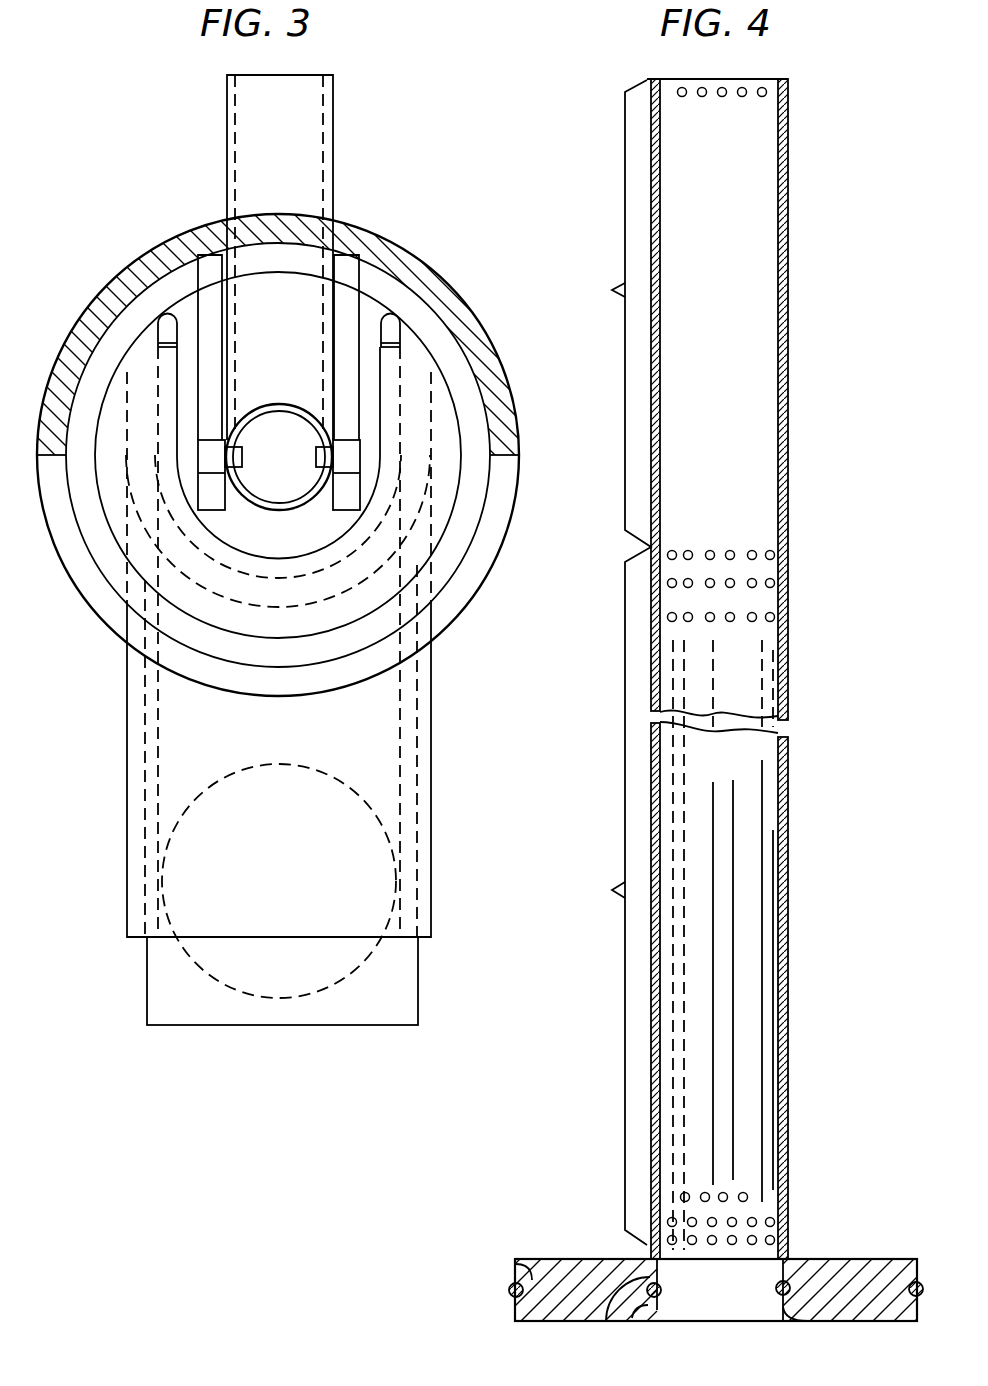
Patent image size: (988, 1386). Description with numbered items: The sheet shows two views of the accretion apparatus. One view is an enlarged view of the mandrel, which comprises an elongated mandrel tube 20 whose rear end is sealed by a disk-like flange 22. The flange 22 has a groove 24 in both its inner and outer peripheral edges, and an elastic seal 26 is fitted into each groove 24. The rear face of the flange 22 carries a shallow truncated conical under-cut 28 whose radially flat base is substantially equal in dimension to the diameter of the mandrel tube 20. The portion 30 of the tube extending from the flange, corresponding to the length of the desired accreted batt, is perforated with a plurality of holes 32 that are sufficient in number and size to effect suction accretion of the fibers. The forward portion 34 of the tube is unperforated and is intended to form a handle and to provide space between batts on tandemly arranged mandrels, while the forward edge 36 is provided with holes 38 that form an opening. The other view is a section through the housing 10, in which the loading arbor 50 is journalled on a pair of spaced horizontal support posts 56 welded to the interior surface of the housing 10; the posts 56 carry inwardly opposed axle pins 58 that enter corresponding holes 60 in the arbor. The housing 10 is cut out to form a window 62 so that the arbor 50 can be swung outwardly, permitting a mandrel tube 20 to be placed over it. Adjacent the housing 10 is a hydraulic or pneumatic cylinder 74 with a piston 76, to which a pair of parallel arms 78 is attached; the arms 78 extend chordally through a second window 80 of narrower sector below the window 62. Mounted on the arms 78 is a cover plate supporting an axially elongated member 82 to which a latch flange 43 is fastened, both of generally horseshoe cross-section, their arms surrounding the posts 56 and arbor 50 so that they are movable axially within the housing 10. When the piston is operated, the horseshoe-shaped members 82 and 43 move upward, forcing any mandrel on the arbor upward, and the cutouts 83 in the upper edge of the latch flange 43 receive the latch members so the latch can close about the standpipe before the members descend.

In FIG. 3, the housing 10 is at (395, 240).
In FIG. 4, the mandrel tube 20 is at (788, 815).
In FIG. 4, the disk-like flange 22 is at (853, 1280).
In FIG. 4, the groove 24 is at (517, 1261).
In FIG. 4, the elastic seal 26 is at (511, 1292).
In FIG. 4, the truncated conical under-cut 28 is at (648, 1320).
In FIG. 4, the perforated portion of mandrel tube 30 is at (601, 891).
In FIG. 4, the holes 32 is at (788, 617).
In FIG. 4, the forward portion of mandrel tube 34 is at (599, 293).
In FIG. 4, the forward edge of mandrel tube 36 is at (788, 80).
In FIG. 4, the holes 38 is at (762, 97).
In FIG. 3, the latch flange 43 is at (163, 318).
In FIG. 3, the loading arbor 50 is at (493, 342).
In FIG. 3, the horizontal support posts 56 is at (199, 293).
In FIG. 3, the axle pins 58 is at (244, 453).
In FIG. 3, the holes 60 is at (318, 461).
In FIG. 3, the window 62 is at (385, 448).
In FIG. 3, the cylinder 74 is at (394, 993).
In FIG. 3, the piston 76 is at (289, 882).
In FIG. 3, the parallel arms 78 is at (160, 755).
In FIG. 3, the second window 80 is at (323, 693).
In FIG. 3, the axially elongated member 82 is at (178, 572).
In FIG. 3, the cutouts 83 is at (393, 328).